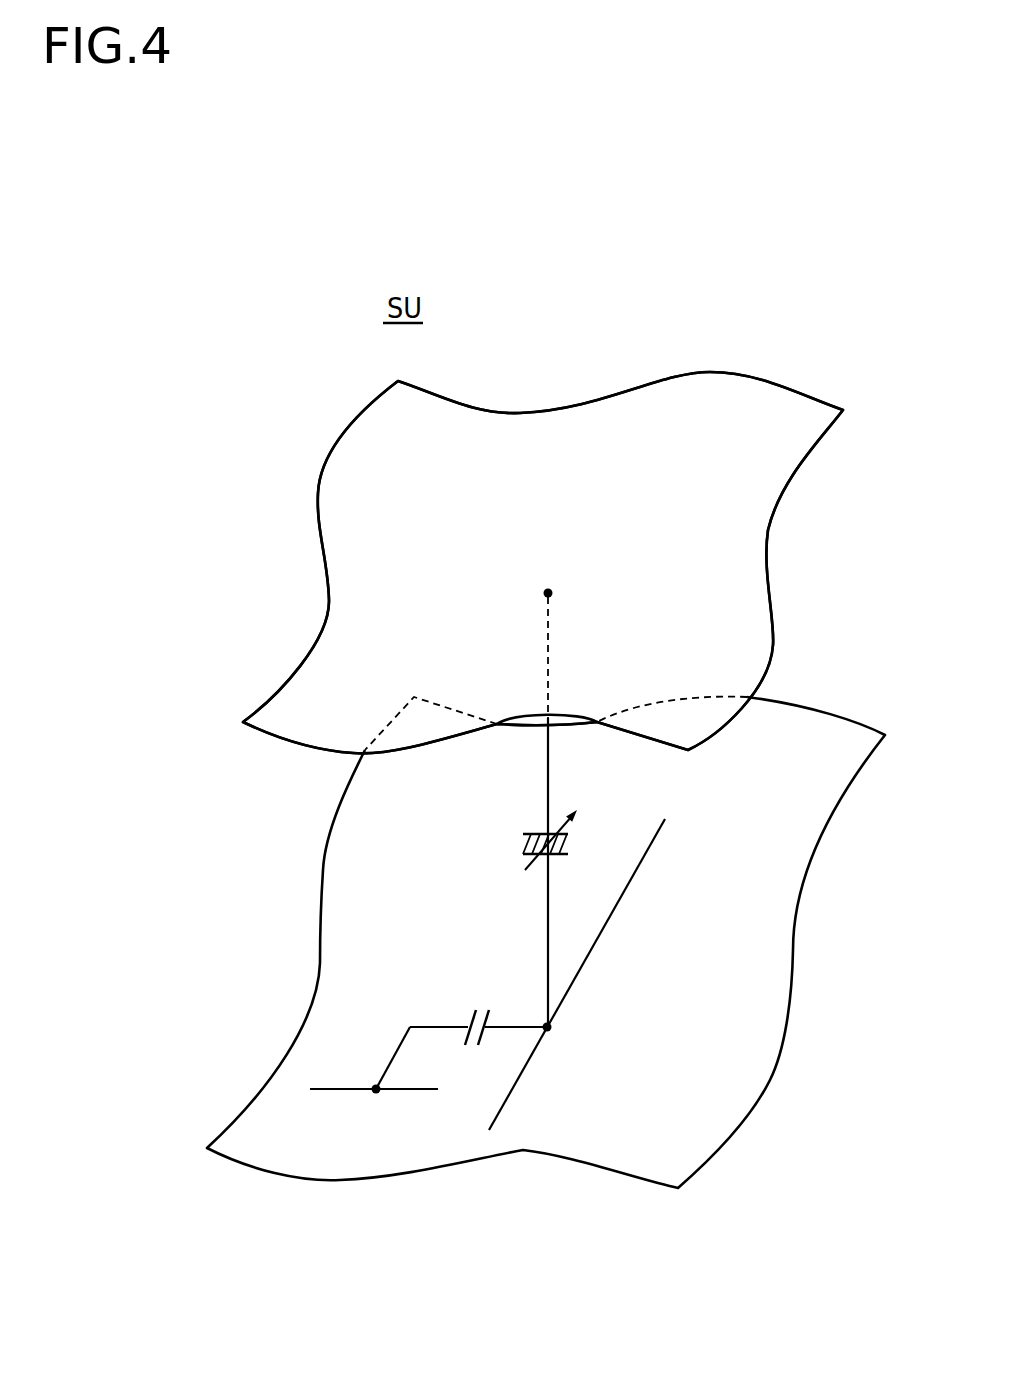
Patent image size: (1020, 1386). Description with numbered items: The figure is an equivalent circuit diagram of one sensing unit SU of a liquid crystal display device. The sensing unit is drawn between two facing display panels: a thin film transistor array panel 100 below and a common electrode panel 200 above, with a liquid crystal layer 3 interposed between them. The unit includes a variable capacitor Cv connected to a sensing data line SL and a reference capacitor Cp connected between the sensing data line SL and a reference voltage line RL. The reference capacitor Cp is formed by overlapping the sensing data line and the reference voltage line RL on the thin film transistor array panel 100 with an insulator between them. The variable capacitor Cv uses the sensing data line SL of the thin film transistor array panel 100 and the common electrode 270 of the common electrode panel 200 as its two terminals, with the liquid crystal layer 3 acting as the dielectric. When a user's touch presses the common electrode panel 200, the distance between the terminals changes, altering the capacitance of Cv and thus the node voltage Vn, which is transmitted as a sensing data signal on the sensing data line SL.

The liquid crystal layer 3 is at (229, 833).
The thin film transistor array panel 100 is at (808, 919).
The common electrode panel 200 is at (786, 593).
The common electrode 270 is at (767, 532).